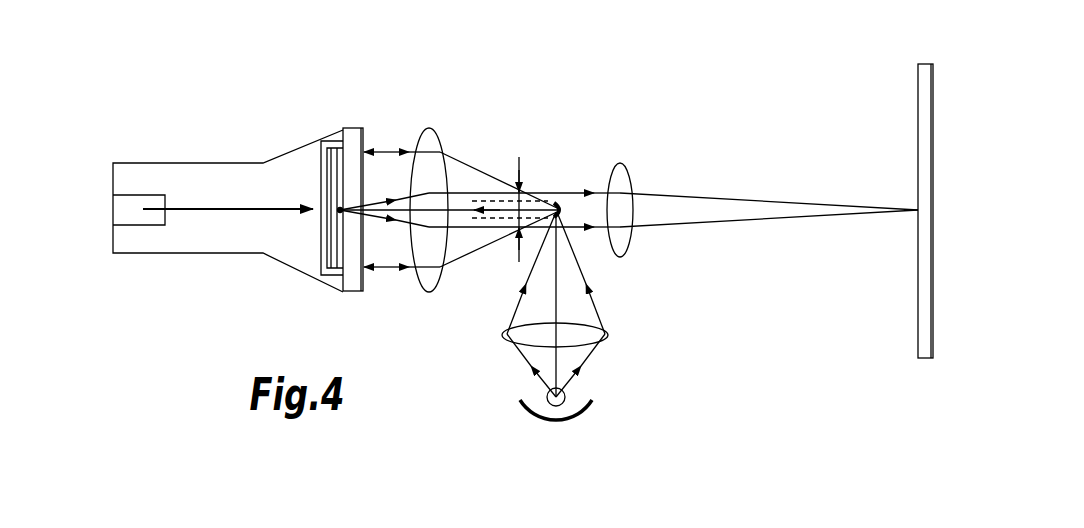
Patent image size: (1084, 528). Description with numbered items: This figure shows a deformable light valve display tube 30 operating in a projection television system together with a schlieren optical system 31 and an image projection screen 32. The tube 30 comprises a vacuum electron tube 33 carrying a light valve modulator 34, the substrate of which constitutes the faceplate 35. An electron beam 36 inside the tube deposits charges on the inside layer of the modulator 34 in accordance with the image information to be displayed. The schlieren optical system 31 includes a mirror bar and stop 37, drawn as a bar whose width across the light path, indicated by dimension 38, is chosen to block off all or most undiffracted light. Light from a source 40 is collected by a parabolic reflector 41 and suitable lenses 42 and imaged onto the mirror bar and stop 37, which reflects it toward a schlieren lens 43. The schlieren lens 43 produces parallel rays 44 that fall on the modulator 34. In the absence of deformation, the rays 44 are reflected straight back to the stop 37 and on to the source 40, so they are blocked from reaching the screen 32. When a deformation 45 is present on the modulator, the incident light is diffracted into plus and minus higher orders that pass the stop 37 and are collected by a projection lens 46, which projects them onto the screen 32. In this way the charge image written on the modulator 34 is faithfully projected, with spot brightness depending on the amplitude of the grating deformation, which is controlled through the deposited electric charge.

The deformable light valve display tube 30 is at (200, 142).
The schlieren optical system 31 is at (601, 274).
The image projection screen 32 is at (918, 138).
The vacuum electron tube 33 is at (162, 253).
The light valve modulator 34 is at (322, 168).
The faceplate 35 is at (355, 291).
The electron beam 36 is at (220, 212).
The mirror bar and stop 37 is at (559, 205).
The beam width 38 is at (519, 194).
The light source 40 is at (565, 403).
The parabolic reflector 41 is at (538, 416).
The lenses 42 is at (608, 334).
The schlieren lens 43 is at (430, 130).
The parallel rays 44 is at (390, 151).
The deformation 45 is at (345, 206).
The projection lens 46 is at (622, 165).